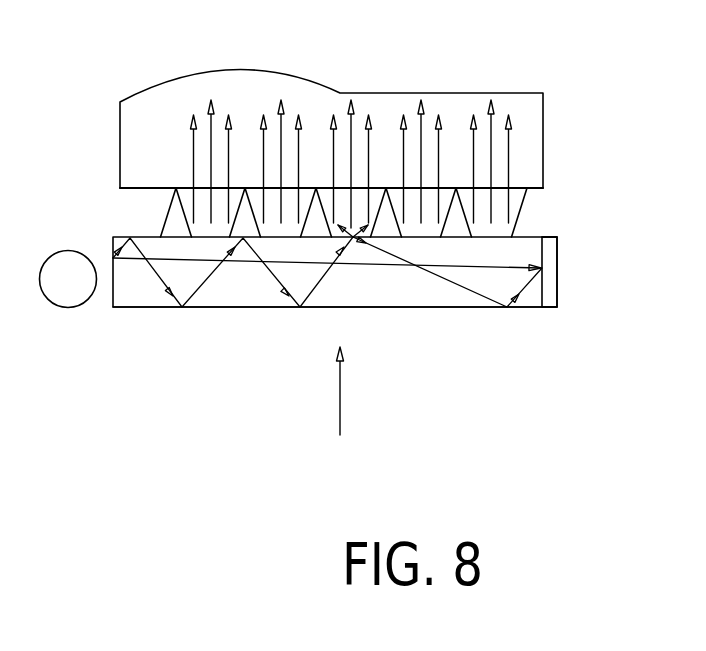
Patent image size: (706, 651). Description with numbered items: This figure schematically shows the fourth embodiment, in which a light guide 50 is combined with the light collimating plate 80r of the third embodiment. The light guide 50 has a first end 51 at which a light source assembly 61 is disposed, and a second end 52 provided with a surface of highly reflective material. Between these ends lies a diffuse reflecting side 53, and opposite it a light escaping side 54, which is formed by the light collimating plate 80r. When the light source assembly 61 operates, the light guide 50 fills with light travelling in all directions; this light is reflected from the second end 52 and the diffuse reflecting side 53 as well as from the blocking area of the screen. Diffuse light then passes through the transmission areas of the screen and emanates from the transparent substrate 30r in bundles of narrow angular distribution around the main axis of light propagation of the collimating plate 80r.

The transparent substrate 30r is at (525, 117).
The light guide 50 is at (115, 237).
The first end 51 is at (120, 290).
The second end 52 is at (545, 285).
The diffuse reflecting side 53 is at (372, 307).
The light escaping side 54 is at (566, 235).
The light source assembly 61 is at (67, 320).
The light collimating plate 80r is at (339, 410).